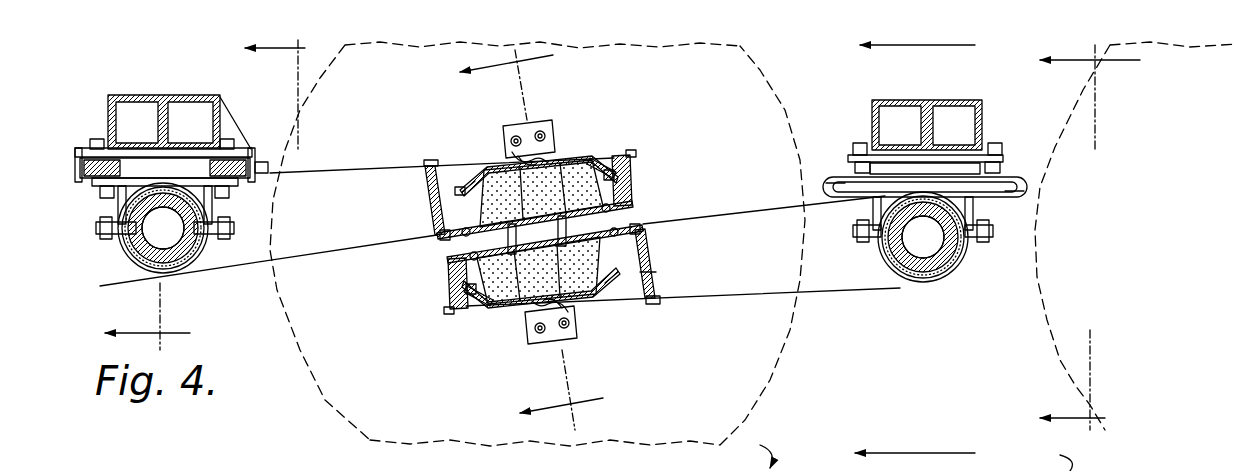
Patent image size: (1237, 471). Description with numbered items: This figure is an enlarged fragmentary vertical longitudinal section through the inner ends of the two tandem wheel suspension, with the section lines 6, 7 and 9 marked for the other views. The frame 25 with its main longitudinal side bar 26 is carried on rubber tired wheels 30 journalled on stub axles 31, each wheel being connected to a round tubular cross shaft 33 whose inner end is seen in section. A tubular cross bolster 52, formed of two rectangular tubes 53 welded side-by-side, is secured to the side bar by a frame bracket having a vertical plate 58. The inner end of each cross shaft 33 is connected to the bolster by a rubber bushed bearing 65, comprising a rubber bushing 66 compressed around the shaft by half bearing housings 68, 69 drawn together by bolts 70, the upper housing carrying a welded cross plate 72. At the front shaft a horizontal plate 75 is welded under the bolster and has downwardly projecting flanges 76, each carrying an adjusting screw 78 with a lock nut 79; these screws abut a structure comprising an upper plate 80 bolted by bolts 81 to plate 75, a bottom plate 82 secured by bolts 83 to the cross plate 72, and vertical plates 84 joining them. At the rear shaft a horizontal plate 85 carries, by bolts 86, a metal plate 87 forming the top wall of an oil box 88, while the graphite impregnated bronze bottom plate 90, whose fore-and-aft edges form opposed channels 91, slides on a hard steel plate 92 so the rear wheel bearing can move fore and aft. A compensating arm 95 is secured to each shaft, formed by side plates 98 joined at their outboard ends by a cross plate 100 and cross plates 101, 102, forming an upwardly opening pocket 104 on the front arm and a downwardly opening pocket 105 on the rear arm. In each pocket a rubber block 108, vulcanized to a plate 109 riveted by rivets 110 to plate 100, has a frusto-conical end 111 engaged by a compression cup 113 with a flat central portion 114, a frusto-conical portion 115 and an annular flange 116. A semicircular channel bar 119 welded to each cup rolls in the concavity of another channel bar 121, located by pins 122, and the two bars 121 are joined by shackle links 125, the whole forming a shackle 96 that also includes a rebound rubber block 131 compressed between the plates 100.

The section line 6— 6 is at (1100, 237).
The section line 7— 7 is at (220, 194).
The section line 9— 9 is at (532, 239).
The frame 25 is at (754, 451).
The main longitudinal side bar 26 is at (1054, 458).
The rubber tired wheel 30 is at (755, 403).
The stub axle 31 is at (658, 280).
The cross shaft 33 is at (181, 268).
The cross bolster 52 is at (166, 78).
The tube 53 is at (136, 95).
The vertical plate 58 is at (915, 258).
The bearing 65 is at (125, 268).
The rubber bushing 66 is at (200, 258).
The half bearing housing 68 is at (543, 232).
The half bearing housing 69 is at (148, 272).
The bolt 70 is at (232, 240).
The cross plate 72 is at (240, 186).
The horizontal plate 75 is at (152, 150).
The flange 76 is at (88, 148).
The adjusting screw 78 is at (264, 162).
The lock nut 79 is at (248, 183).
The upper plate 80 is at (184, 152).
The bolt 81 is at (97, 139).
The bottom plate 82 is at (83, 178).
The bolt 83 is at (222, 198).
The vertical plate 84 is at (165, 168).
The horizontal plate 85 is at (851, 155).
The bolt 86 is at (858, 143).
The metal plate 87 is at (898, 160).
The oil box 88 is at (1032, 178).
The bottom plate 90 is at (1005, 172).
The channel 91 is at (828, 187).
The hard steel plate 92 is at (1035, 188).
The compensating arm 95 is at (336, 170).
The shackle 96 is at (563, 122).
The side plate 98 is at (752, 200).
The cross plate 100 is at (438, 224).
The cross plate 101 is at (630, 176).
The cross plate 102 is at (428, 186).
The upwardly opening pocket 104 is at (436, 170).
The downwardly opening pocket 105 is at (656, 302).
The rubber block 108 is at (618, 158).
The plate 109 is at (650, 202).
The rivet 110 is at (628, 198).
The frusto-conical form 111 is at (468, 172).
The compression plate or cup 113 is at (578, 160).
The flat central portion 114 is at (470, 165).
The frusto-conical portion 115 is at (616, 168).
The annular flange 116 is at (636, 156).
The semicircular channel bar 119 is at (540, 232).
The semicircular channel bar 121 is at (586, 137).
The pin 122 is at (528, 123).
The shackle link 125 is at (573, 320).
The rebound rubber block 131 is at (496, 242).